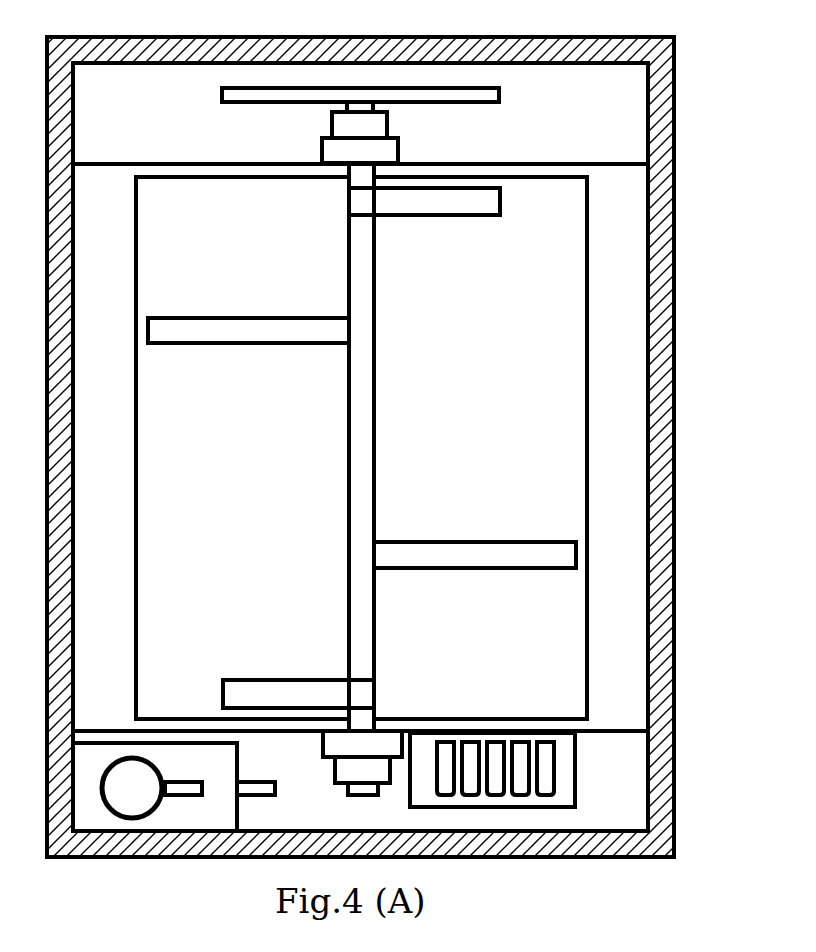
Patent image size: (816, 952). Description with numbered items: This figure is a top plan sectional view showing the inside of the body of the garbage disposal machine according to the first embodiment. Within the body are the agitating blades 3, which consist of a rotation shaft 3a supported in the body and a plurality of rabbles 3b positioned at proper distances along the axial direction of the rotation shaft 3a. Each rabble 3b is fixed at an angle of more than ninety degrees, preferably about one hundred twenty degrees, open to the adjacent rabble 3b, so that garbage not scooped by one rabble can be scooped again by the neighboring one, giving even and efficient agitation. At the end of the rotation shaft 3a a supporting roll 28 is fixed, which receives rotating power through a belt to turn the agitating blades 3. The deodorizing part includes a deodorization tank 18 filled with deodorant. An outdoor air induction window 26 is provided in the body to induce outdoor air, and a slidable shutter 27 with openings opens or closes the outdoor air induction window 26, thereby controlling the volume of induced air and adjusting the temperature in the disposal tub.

The agitating blades 3 is at (598, 327).
The rotation shaft 3a is at (375, 478).
The rabbles 3b is at (412, 215).
The deodorization tank 18 is at (175, 818).
The outdoor air induction window 26 is at (463, 795).
The shutter 27 is at (560, 780).
The supporting roll 28 is at (410, 98).